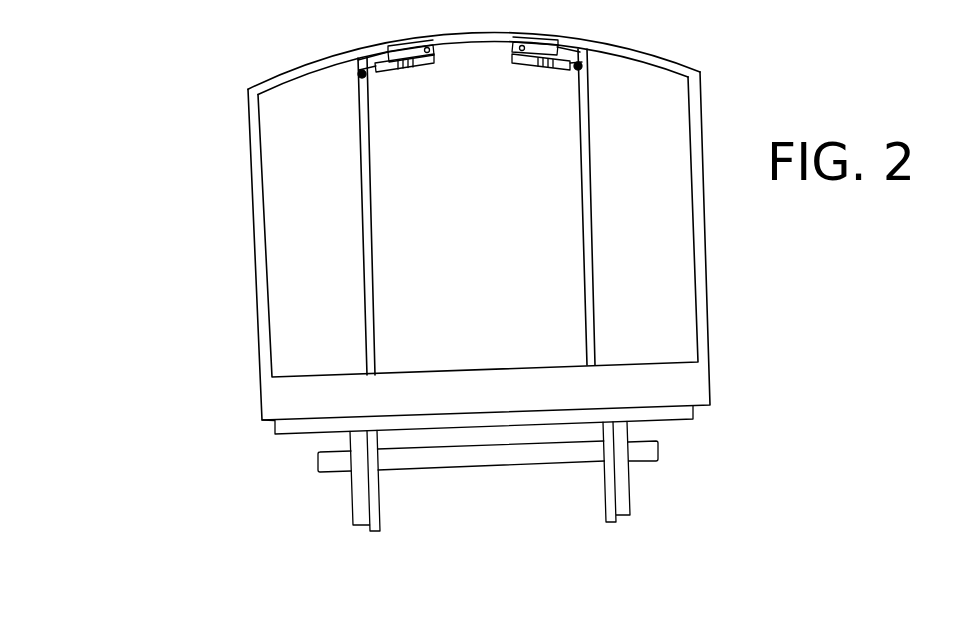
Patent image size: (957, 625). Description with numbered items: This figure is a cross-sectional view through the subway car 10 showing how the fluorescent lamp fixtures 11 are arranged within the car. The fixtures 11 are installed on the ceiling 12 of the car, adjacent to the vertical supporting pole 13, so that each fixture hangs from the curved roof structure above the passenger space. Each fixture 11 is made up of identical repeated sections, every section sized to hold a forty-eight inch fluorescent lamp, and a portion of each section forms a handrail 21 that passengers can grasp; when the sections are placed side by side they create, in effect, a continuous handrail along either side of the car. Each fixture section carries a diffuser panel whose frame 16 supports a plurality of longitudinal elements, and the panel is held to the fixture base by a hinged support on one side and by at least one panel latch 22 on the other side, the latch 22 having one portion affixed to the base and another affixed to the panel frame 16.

The subway car 10 is at (250, 236).
The fluorescent lamp fixture 11 is at (513, 69).
The ceiling 12 is at (647, 54).
The vertical supporting pole 13 is at (362, 228).
The frame 16 is at (388, 72).
The handrail 21 is at (358, 78).
The panel latch 22 is at (514, 48).